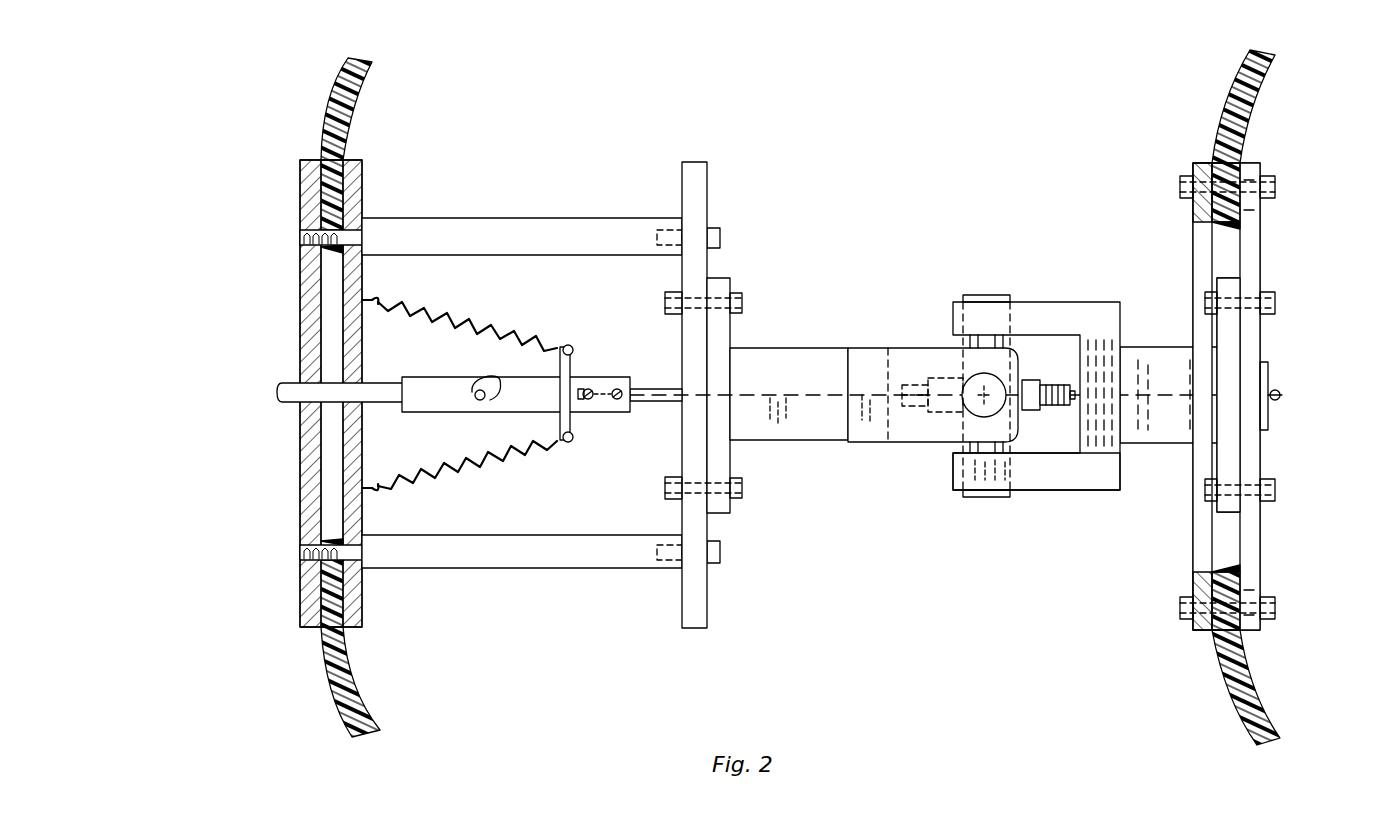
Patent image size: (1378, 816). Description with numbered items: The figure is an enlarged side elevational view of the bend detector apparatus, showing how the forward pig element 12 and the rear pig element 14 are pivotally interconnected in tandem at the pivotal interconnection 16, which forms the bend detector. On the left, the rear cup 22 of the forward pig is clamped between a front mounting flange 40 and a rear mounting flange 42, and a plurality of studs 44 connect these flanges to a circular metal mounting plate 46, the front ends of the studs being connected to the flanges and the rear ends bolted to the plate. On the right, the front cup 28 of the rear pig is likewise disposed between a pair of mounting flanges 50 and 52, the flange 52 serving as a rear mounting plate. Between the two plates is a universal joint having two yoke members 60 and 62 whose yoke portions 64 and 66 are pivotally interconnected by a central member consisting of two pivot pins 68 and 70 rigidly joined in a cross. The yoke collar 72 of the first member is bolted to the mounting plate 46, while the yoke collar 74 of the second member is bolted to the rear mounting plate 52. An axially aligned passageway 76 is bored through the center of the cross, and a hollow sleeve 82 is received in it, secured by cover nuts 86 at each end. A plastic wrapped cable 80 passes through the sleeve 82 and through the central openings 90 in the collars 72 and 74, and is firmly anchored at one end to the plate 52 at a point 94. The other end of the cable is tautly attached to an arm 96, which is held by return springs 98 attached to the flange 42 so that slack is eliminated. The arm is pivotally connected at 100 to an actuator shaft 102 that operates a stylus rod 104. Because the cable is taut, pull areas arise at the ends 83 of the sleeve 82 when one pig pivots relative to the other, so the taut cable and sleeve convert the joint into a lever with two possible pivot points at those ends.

The forward pig element 12 is at (300, 132).
The rear pig element 14 is at (1322, 305).
The pivotal interconnection 16 is at (962, 88).
The rear cup 22 is at (365, 70).
The front cup 28 is at (1268, 70).
The front mounting flange 40 is at (312, 182).
The rear mounting flange 42 is at (355, 182).
The studs 44 is at (585, 232).
The mounting plate 46 is at (698, 188).
The mounting flange 50 is at (1200, 168).
The mounting flange 52 is at (1255, 166).
The yoke member 60 is at (835, 470).
The yoke member 62 is at (1065, 512).
The yoke portion 64 is at (926, 432).
The yoke portion 66 is at (1022, 486).
The pivot pin 68 is at (975, 385).
The pivot pin 70 is at (988, 300).
The yoke flange or collar 72 is at (728, 458).
The yoke flange or collar 74 is at (1225, 470).
The passageway 76 is at (1032, 380).
The cable 80 is at (655, 392).
The sleeve 82 is at (912, 376).
The ends of the sleeve 83 is at (900, 408).
The cover nuts 86 is at (1042, 386).
The central openings 90 is at (722, 392).
The anchor point 94 is at (1283, 396).
The arm 96 is at (617, 401).
The return springs 98 is at (507, 344).
The pivotal connection 100 is at (480, 401).
The actuator shaft 102 is at (412, 400).
The stylus rod 104 is at (276, 392).